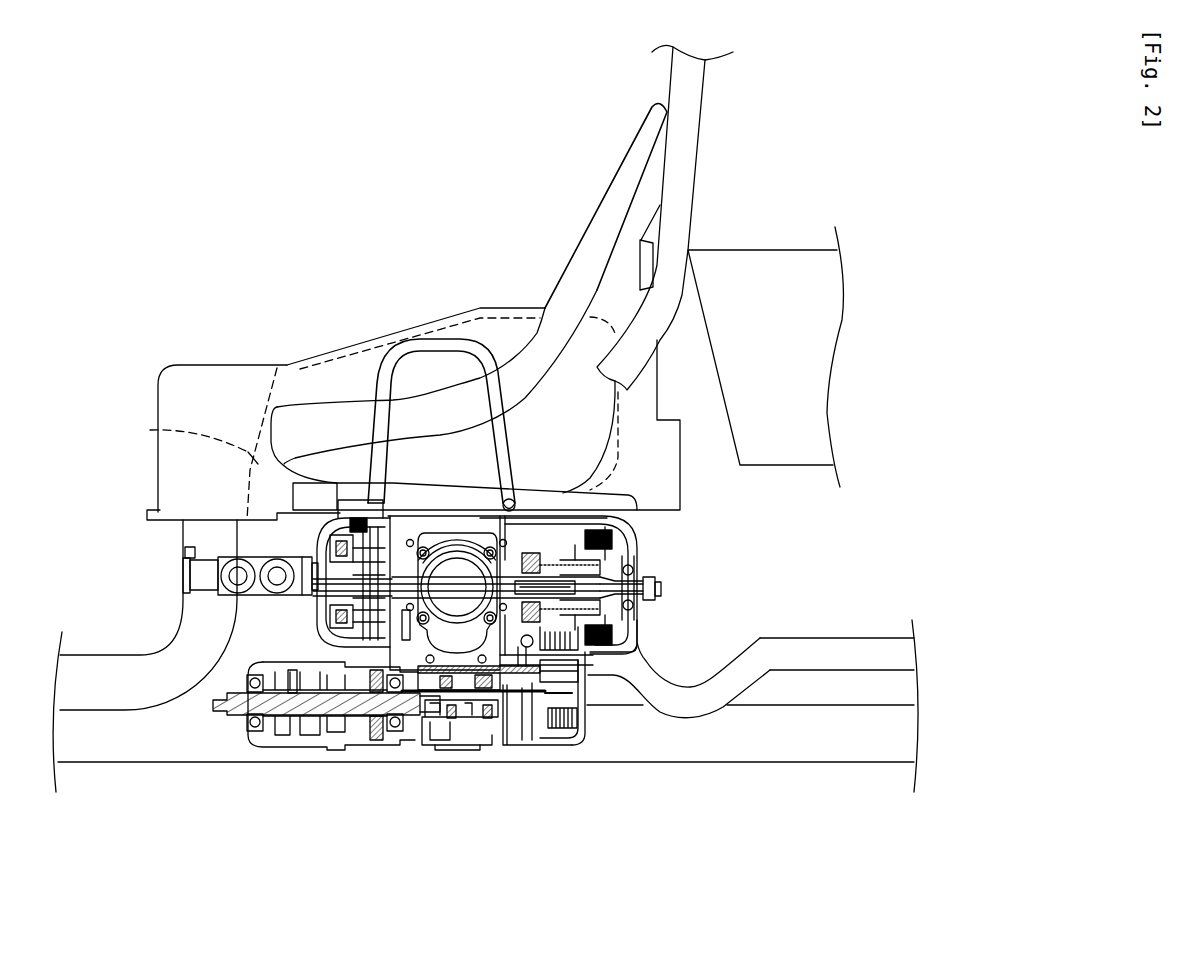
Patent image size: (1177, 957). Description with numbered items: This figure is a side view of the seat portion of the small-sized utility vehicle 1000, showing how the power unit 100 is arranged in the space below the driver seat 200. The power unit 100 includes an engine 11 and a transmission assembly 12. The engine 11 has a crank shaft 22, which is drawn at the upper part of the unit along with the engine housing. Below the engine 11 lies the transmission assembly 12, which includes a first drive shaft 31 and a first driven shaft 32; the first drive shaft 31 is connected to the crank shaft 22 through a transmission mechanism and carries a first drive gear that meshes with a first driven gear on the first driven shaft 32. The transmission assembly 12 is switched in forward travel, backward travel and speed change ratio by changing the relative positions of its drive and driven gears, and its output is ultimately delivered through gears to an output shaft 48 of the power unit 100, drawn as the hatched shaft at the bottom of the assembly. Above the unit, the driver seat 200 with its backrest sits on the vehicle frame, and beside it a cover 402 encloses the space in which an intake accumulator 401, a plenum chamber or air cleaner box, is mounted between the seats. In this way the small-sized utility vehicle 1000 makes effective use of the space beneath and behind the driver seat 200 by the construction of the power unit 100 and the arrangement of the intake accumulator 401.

The small-sized utility vehicle 1000 is at (210, 212).
The cover 402 is at (237, 365).
The intake accumulator 401 is at (150, 430).
The driver seat 200 is at (607, 180).
The crank shaft 22 is at (648, 562).
The engine 11 is at (667, 595).
The output shaft 48 is at (298, 707).
The transmission assembly 12 is at (391, 758).
The first driven shaft 32 is at (445, 708).
The first drive shaft 31 is at (517, 692).
The power unit 100 is at (546, 750).